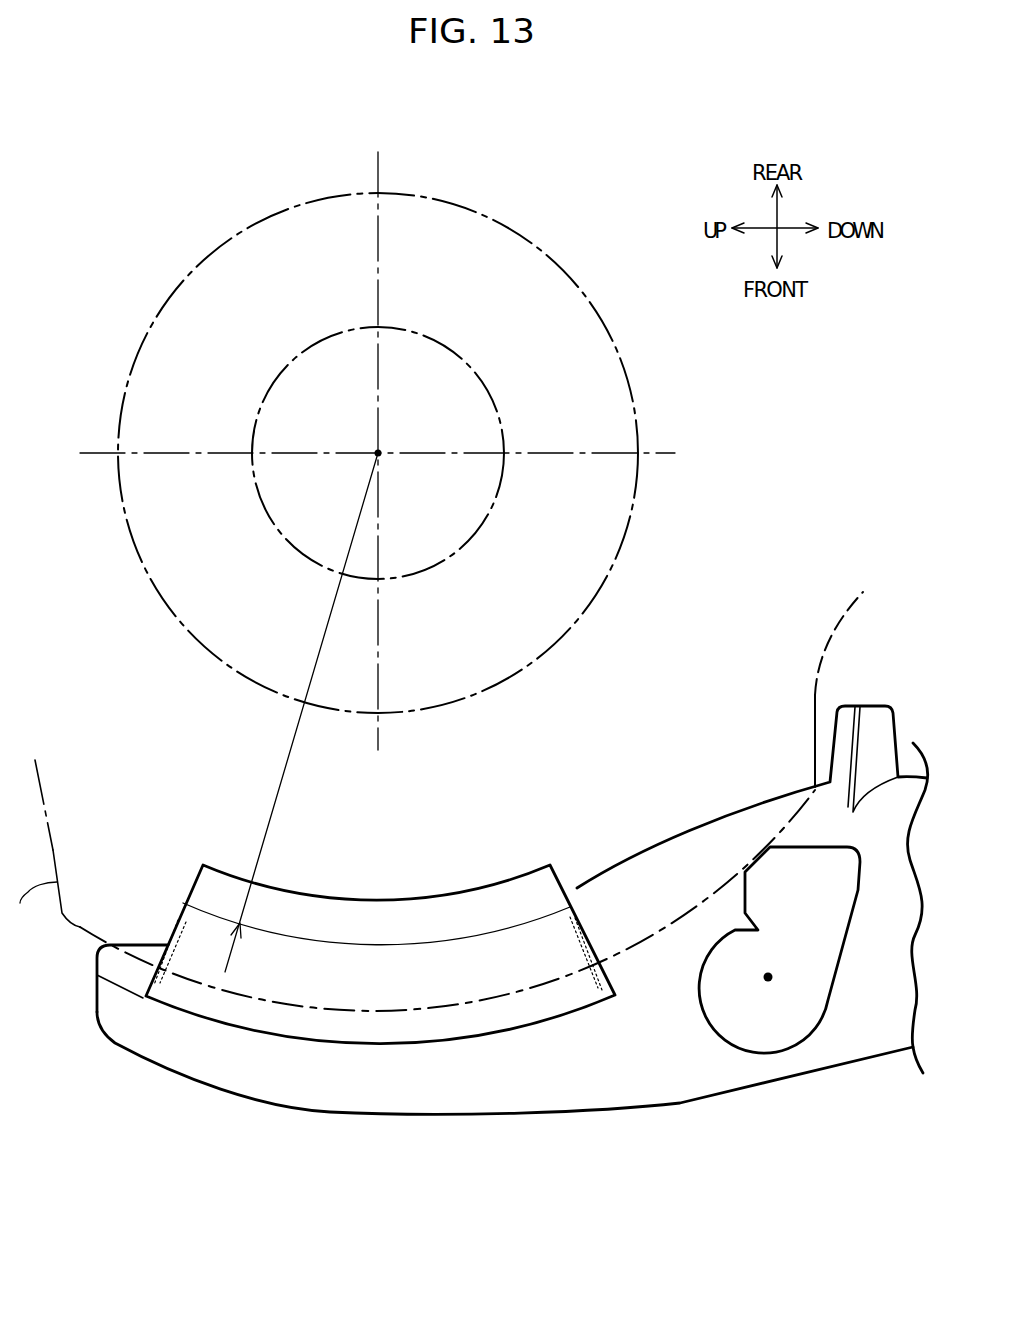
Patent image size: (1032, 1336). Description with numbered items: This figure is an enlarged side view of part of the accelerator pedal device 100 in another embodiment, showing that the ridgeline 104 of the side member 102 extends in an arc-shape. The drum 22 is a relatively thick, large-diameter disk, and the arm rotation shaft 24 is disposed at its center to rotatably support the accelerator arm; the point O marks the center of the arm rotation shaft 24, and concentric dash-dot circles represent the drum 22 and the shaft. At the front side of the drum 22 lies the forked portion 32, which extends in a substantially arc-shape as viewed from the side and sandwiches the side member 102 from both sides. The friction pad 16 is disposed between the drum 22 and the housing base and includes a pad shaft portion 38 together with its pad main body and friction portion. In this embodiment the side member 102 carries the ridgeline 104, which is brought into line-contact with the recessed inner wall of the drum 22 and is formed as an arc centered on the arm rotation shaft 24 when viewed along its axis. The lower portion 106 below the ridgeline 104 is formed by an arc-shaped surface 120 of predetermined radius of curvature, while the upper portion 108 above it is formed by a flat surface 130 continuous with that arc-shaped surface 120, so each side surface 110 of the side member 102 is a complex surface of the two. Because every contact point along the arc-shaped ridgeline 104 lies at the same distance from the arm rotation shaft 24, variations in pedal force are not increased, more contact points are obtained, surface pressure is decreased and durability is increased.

The accelerator pedal device 100 is at (215, 180).
The drum 22 is at (142, 283).
The arm rotation shaft 24 is at (438, 343).
The point O is at (380, 452).
The friction pad 16 is at (512, 987).
The forked portion 32 is at (20, 903).
The pad shaft portion 38 is at (797, 1008).
The side member 102 is at (190, 1025).
The ridgeline 104 is at (388, 943).
The lower portion 106 is at (475, 975).
The upper portion 108 is at (302, 913).
The side surface 110 is at (323, 977).
The arc-shaped surface 120 is at (395, 988).
The flat surface 130 is at (457, 913).